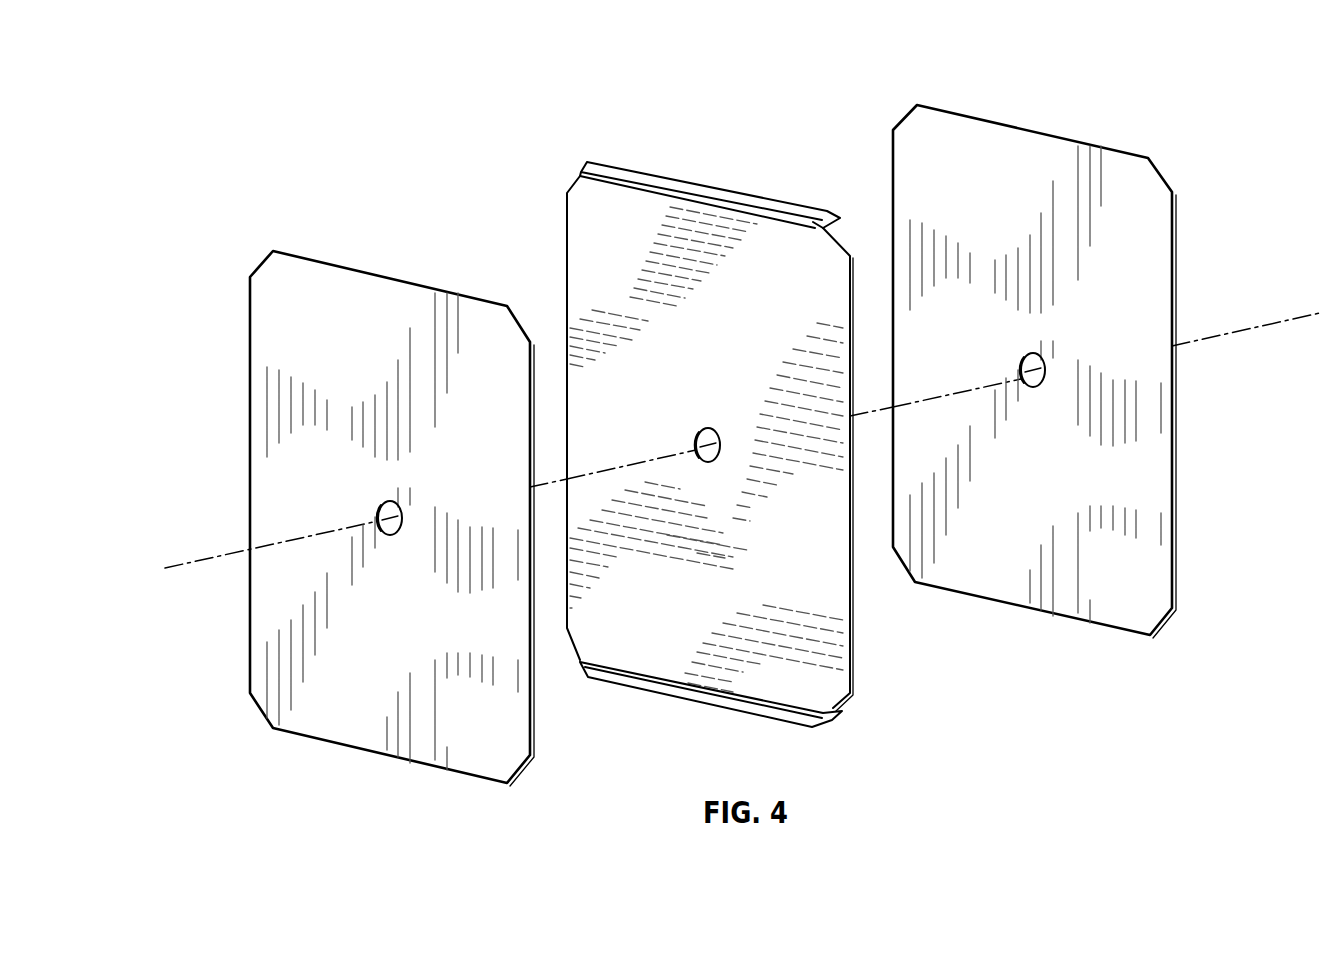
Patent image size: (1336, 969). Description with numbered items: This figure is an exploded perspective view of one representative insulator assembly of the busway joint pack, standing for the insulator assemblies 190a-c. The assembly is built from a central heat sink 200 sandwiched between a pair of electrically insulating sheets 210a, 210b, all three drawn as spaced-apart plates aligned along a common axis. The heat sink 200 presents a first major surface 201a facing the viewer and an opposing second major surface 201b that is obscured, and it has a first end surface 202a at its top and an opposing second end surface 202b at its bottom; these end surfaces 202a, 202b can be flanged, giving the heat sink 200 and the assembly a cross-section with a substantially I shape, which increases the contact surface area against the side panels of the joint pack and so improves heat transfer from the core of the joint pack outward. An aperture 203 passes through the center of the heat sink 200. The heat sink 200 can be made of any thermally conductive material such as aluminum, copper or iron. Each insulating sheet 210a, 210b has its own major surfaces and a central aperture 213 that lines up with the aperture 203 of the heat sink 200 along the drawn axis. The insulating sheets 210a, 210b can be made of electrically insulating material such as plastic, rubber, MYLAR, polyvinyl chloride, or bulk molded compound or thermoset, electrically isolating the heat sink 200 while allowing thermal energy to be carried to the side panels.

The insulator assemblies 190a-c is at (223, 81).
The heat sink 200 is at (732, 149).
The first major surface 201a is at (748, 372).
The second major surface 201b is at (853, 657).
The first end surface 202a is at (677, 180).
The second end surface 202b is at (720, 708).
The aperture 203 is at (696, 425).
The first electrically insulating sheet 210a is at (322, 242).
The second electrically insulating sheet 210b is at (1052, 127).
The aperture 213 is at (378, 506).